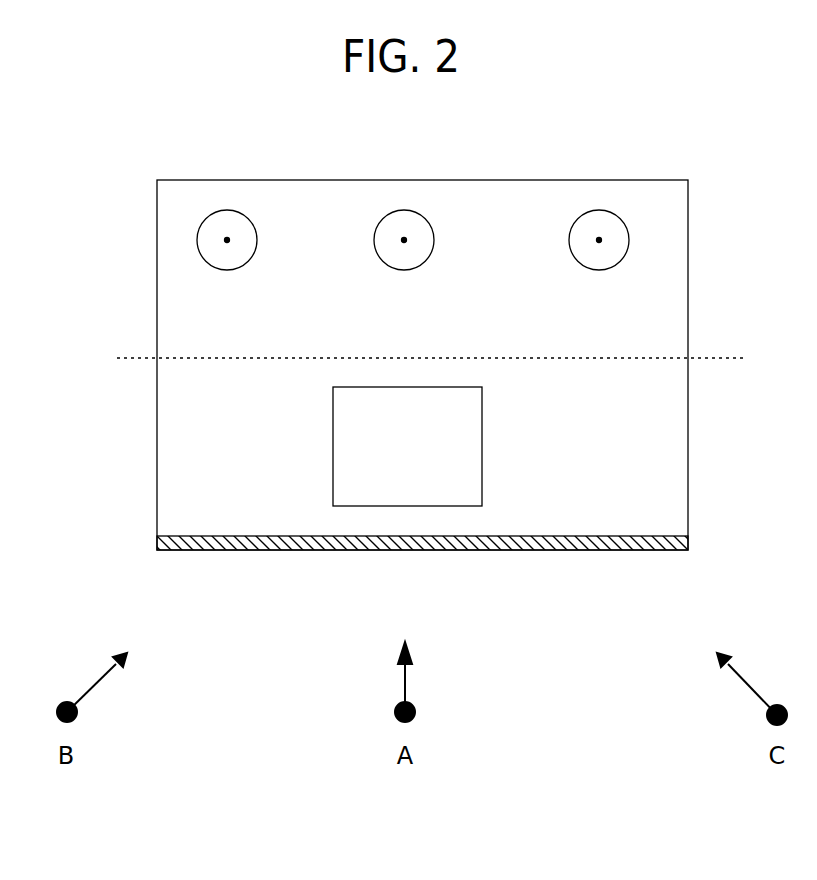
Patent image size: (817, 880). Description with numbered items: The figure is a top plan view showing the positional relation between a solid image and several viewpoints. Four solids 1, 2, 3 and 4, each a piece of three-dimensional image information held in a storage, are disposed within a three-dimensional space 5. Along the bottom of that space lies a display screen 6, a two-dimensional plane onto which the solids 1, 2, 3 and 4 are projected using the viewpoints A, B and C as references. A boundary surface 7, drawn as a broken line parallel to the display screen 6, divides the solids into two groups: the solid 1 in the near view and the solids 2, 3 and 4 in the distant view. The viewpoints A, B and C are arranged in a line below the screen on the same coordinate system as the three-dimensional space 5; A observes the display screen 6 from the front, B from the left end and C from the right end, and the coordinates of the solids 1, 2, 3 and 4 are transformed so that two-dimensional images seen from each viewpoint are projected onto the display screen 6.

The solid 1 is at (333, 457).
The solid 2 is at (229, 270).
The solid 3 is at (406, 270).
The solid 4 is at (601, 270).
The three-dimensional space 5 is at (156, 438).
The display screen 6 is at (157, 545).
The boundary surface 7 is at (117, 358).